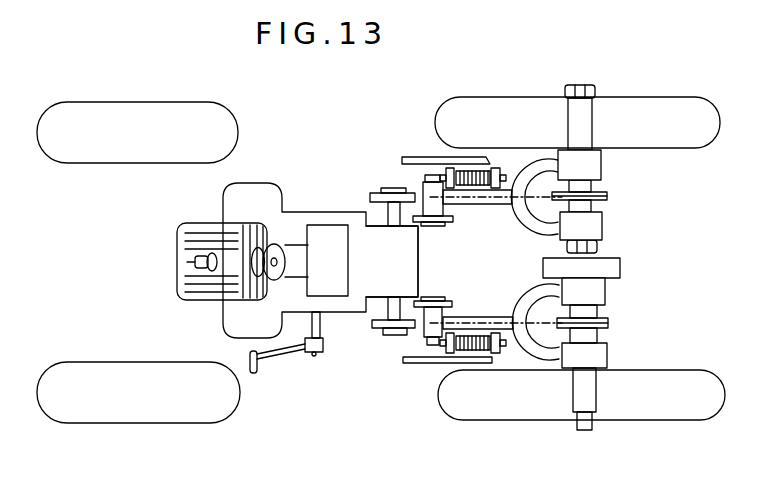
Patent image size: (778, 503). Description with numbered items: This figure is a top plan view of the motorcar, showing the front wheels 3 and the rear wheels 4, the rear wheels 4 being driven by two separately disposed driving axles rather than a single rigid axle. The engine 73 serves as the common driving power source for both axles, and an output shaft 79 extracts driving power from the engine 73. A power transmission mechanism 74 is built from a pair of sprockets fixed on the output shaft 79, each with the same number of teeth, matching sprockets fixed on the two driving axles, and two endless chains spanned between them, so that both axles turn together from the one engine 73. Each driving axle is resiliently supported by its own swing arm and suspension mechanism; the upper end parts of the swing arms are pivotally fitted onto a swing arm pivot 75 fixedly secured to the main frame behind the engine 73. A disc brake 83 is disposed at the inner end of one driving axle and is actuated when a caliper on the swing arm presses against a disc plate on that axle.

The front wheels 3 is at (185, 413).
The rear wheels 4 is at (673, 406).
The engine 73 is at (255, 201).
The output shaft 79 is at (394, 221).
The power transmission mechanism 74 is at (418, 338).
The swing arm pivot 75 is at (428, 191).
The disc brake 83 is at (622, 265).